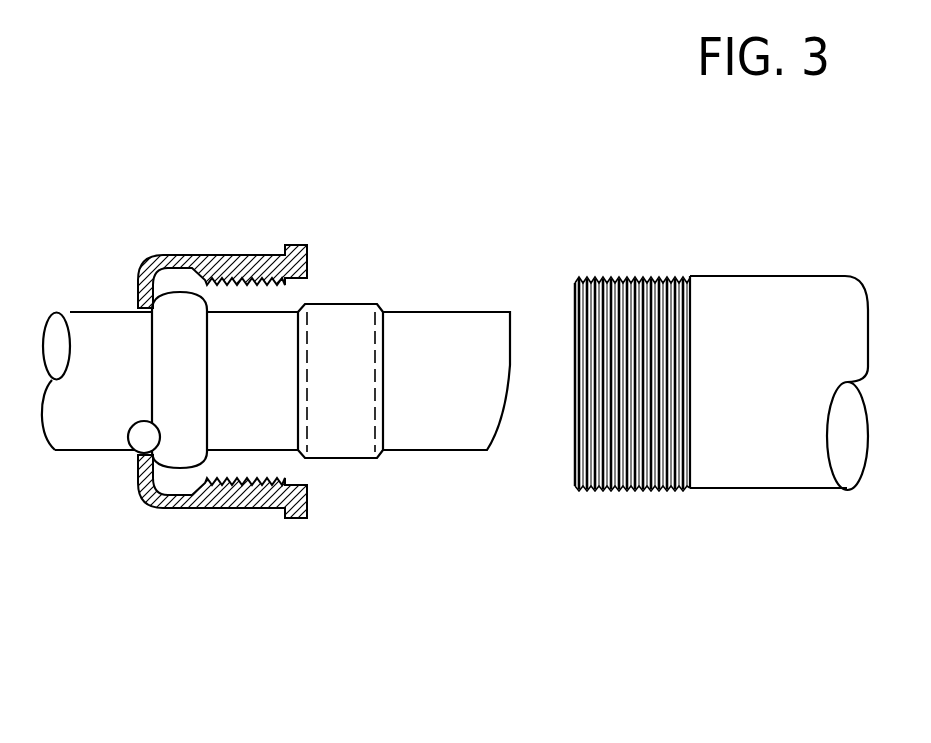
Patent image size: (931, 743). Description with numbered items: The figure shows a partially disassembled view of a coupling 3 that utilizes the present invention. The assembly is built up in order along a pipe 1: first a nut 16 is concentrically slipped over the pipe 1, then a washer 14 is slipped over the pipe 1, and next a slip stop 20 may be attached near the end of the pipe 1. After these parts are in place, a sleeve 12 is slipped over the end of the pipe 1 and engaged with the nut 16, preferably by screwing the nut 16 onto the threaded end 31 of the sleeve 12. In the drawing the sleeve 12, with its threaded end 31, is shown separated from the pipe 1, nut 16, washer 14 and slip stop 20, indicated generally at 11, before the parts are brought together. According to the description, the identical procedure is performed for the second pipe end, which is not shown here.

The pipe 1 is at (103, 342).
The coupling 3 is at (475, 223).
The fitting 11 is at (538, 329).
The sleeve 12 is at (788, 455).
The washer 14 is at (133, 421).
The nut 16 is at (305, 518).
The slip stop 20 is at (343, 420).
The threaded end 31 is at (625, 490).